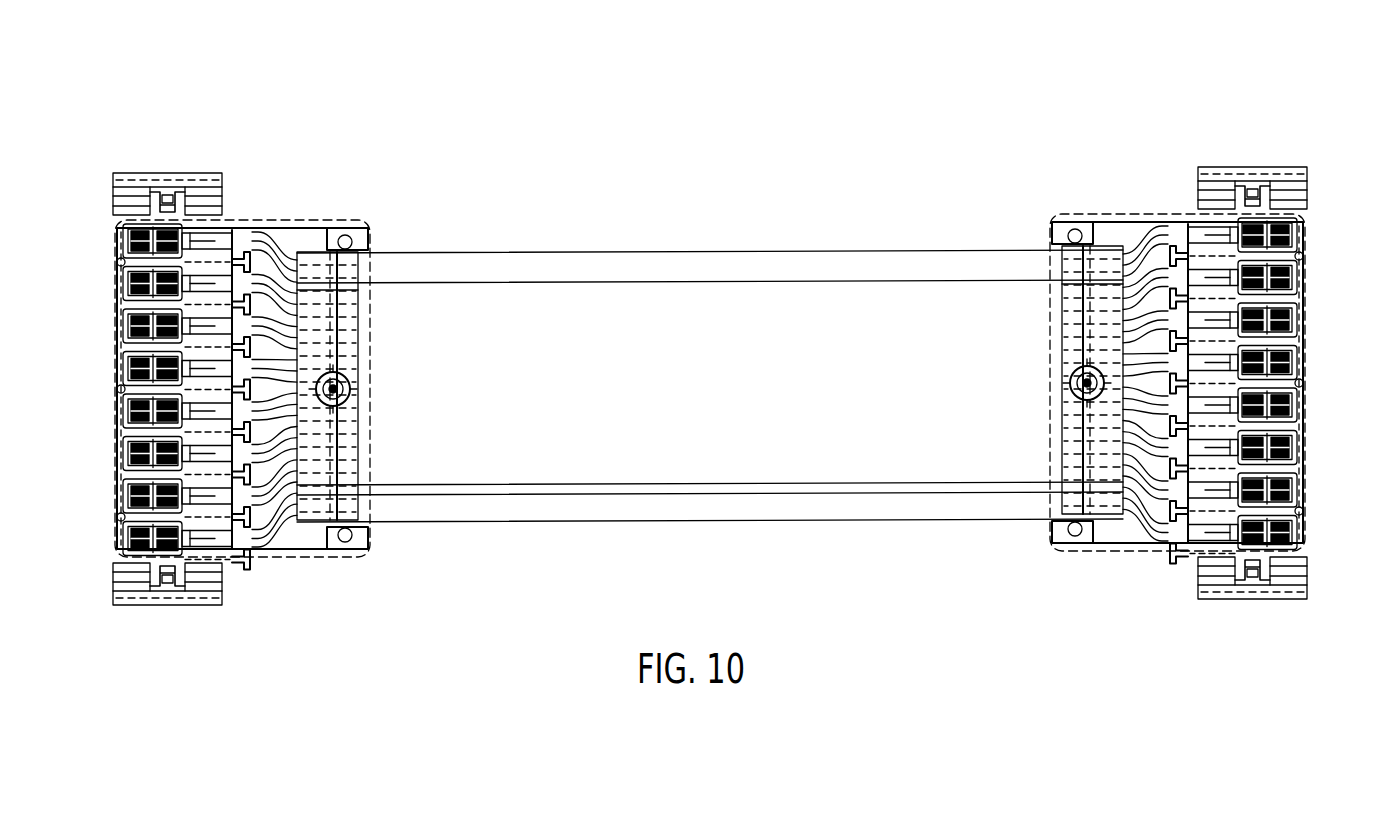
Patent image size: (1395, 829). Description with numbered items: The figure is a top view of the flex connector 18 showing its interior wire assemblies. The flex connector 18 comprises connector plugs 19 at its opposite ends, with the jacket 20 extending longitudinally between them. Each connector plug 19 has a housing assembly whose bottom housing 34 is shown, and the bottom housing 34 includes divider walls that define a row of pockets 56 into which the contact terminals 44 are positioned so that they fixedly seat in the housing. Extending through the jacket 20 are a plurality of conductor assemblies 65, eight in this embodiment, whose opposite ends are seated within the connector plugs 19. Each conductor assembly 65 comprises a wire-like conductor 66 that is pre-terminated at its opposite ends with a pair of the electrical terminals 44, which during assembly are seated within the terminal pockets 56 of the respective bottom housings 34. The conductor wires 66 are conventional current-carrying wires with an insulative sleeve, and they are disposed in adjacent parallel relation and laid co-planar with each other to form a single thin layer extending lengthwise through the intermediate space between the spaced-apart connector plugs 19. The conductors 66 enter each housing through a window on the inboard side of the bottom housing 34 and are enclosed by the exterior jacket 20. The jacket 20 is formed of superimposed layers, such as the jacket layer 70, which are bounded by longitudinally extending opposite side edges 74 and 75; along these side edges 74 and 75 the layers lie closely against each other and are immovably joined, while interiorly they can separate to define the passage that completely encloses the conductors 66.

The flex connector 18 is at (727, 346).
The connector plug 19 is at (727, 367).
The jacket 20 is at (710, 222).
The bottom housing 34 is at (254, 220).
The contact terminal 44 is at (168, 216).
The pocket 56 is at (140, 232).
The conductor assembly 65 is at (283, 255).
The conductor wire 66 is at (710, 388).
The jacket layer 70 is at (710, 510).
The side edge 74 is at (764, 522).
The side edge 75 is at (655, 252).